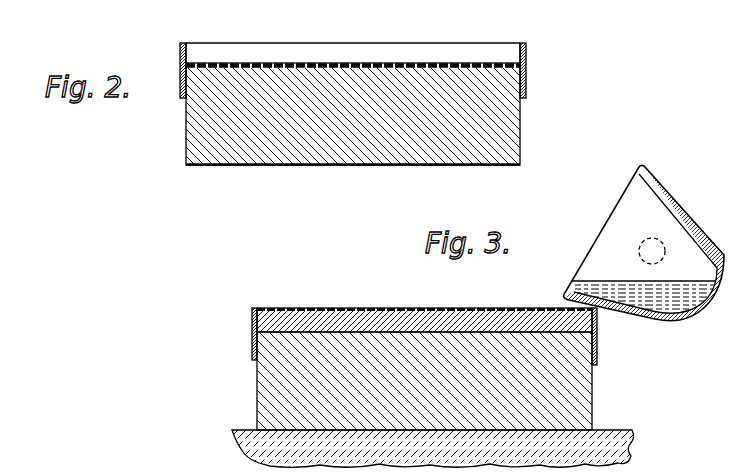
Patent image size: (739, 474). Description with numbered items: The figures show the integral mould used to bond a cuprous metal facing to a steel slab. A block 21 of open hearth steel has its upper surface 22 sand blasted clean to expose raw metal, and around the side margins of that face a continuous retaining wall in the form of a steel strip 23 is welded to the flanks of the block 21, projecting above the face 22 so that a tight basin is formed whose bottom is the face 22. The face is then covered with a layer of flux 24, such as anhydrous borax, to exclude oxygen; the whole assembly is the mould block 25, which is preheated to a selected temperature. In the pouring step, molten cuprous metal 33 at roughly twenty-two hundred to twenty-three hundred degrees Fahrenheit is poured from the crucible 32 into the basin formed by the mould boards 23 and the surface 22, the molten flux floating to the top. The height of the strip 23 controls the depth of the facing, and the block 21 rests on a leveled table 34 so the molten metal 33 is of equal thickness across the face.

In FIG. 2, the block 21 is at (285, 167).
In FIG. 3, the block 21 is at (586, 391).
In FIG. 2, the upper surface 22 is at (312, 62).
In FIG. 2, the steel strip 23 is at (528, 63).
In FIG. 3, the steel strip 23 is at (599, 338).
In FIG. 2, the layer of flux 24 is at (386, 62).
In FIG. 2, the mould block 25 is at (178, 45).
In FIG. 3, the crucible 32 is at (652, 197).
In FIG. 3, the molten cuprous metal 33 is at (352, 283).
In FIG. 3, the table 34 is at (619, 448).